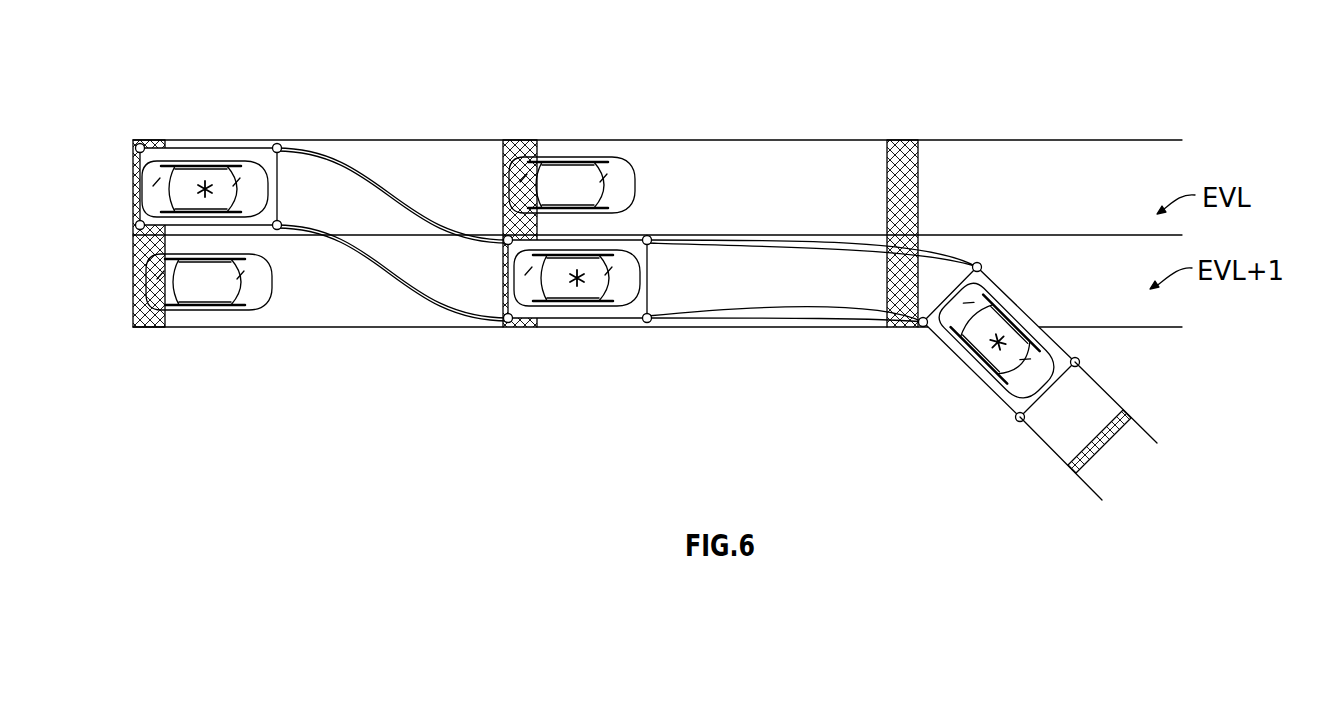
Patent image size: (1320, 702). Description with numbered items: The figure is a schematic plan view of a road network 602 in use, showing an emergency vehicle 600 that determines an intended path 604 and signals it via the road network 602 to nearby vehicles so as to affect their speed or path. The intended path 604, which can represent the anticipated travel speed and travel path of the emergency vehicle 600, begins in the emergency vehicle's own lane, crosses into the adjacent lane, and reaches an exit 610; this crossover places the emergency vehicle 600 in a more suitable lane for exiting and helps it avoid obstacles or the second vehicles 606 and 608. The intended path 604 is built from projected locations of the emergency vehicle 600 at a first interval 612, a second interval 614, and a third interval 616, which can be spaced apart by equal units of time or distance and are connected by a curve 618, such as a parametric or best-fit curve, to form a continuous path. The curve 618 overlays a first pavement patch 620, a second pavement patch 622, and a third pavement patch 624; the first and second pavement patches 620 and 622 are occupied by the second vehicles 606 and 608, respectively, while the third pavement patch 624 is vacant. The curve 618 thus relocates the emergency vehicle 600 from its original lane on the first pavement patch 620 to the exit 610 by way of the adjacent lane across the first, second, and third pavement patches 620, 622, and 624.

The emergency vehicle 600 is at (190, 168).
The road network 602 is at (1142, 90).
The intended path 604 is at (422, 292).
The second vehicle 606 is at (553, 160).
The second vehicle 608 is at (192, 308).
The exit 610 is at (1135, 421).
The first interval 612 is at (278, 212).
The second interval 614 is at (648, 288).
The third interval 616 is at (1042, 395).
The curve 618 is at (387, 192).
The first pavement patch 620 is at (327, 313).
The second pavement patch 622 is at (747, 328).
The third pavement patch 624 is at (1148, 308).